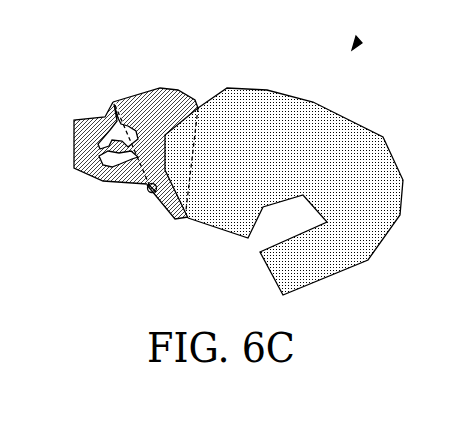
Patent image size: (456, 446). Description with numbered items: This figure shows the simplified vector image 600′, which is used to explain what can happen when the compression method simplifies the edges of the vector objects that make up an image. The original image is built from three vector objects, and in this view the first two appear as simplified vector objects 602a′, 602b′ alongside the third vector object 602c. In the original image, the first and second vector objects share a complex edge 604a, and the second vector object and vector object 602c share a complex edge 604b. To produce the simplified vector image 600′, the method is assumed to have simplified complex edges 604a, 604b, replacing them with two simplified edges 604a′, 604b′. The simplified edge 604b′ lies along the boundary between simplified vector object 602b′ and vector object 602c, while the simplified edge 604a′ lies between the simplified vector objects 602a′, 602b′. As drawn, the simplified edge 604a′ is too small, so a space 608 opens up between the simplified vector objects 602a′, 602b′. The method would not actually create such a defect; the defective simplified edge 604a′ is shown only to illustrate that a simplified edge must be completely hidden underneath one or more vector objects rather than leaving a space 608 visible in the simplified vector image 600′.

The simplified vector image 600′ is at (357, 42).
The simplified vector object 602a′ is at (100, 116).
The simplified vector object 602b′ is at (160, 88).
The vector object 602c is at (313, 102).
The complex edge 604a is at (157, 204).
The simplified edge 604a′ is at (154, 197).
The complex edge 604b is at (176, 220).
The simplified edge 604b′ is at (195, 128).
The space 608 is at (113, 104).